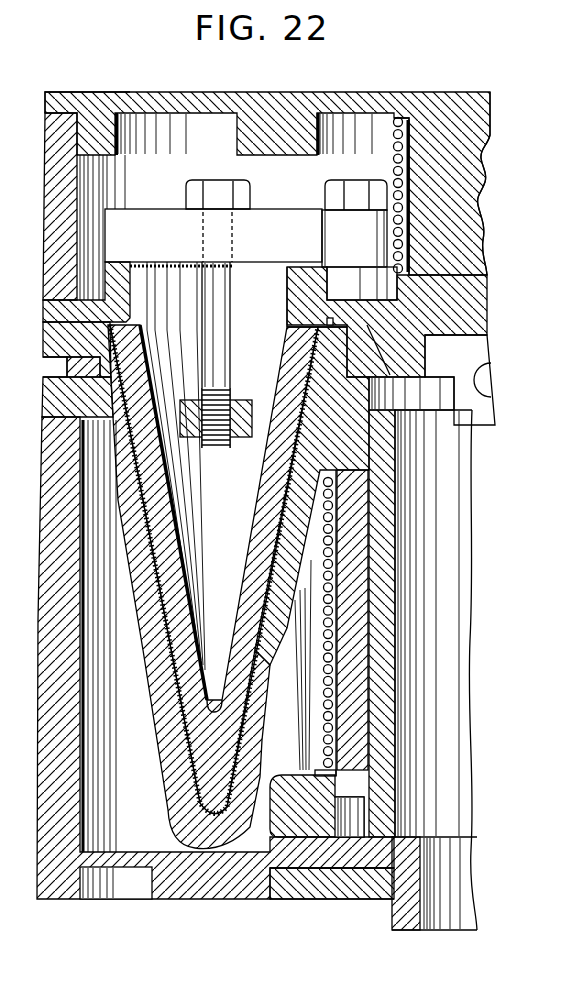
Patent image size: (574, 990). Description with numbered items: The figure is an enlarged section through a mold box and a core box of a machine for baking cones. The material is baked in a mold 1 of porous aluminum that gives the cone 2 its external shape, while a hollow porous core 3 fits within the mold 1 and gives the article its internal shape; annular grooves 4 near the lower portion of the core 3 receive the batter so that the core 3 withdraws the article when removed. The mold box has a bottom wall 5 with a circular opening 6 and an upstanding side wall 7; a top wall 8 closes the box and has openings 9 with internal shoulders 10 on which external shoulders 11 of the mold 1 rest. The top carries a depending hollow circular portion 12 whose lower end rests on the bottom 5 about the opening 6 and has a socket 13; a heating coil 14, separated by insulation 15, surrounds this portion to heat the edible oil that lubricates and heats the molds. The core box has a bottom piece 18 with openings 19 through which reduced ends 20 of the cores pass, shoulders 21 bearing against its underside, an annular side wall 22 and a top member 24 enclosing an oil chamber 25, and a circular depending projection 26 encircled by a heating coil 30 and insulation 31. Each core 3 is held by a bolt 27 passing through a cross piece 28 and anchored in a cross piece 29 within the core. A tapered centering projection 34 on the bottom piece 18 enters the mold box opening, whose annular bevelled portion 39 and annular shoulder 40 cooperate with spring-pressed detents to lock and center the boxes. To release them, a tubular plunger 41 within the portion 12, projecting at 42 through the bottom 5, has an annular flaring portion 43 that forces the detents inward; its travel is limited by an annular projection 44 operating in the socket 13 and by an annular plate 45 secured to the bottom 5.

The mold 1 is at (300, 533).
The cone 2 is at (253, 630).
The core 3 is at (255, 518).
The annular grooves 4 is at (230, 728).
The bottom wall 5 is at (219, 890).
The circular opening 6 is at (327, 868).
The side wall 7 is at (42, 667).
The top wall 8 is at (70, 372).
The openings 9 is at (65, 402).
The internal shoulders 10 is at (73, 350).
The external shoulders 11 is at (44, 322).
The depending hollow circular portion 12 is at (354, 615).
The socket 13 is at (354, 822).
The heating coil 14 is at (320, 680).
The insulation 15 is at (337, 648).
The bottom piece 18 is at (350, 310).
The openings 19 is at (337, 249).
The reduced ends 20 is at (300, 265).
The shoulders 21 is at (288, 327).
The annular side wall 22 is at (33, 130).
The top member 24 is at (307, 110).
The chamber 25 is at (198, 168).
The circular depending projection 26 is at (462, 207).
The bolt 27 is at (228, 300).
The cross piece 28 is at (141, 225).
The cross piece 29 is at (243, 400).
The heating coil 30 is at (397, 125).
The insulation 31 is at (412, 133).
The tapered centering projection 34 is at (427, 357).
The annular bevelled portion 39 is at (367, 328).
The annular shoulder 40 is at (380, 385).
The tubular plunger 41 is at (397, 747).
The projecting portion of plunger 42 is at (407, 920).
The annular flaring portion 43 is at (460, 433).
The annular projection 44 is at (357, 857).
The annular plate 45 is at (312, 900).